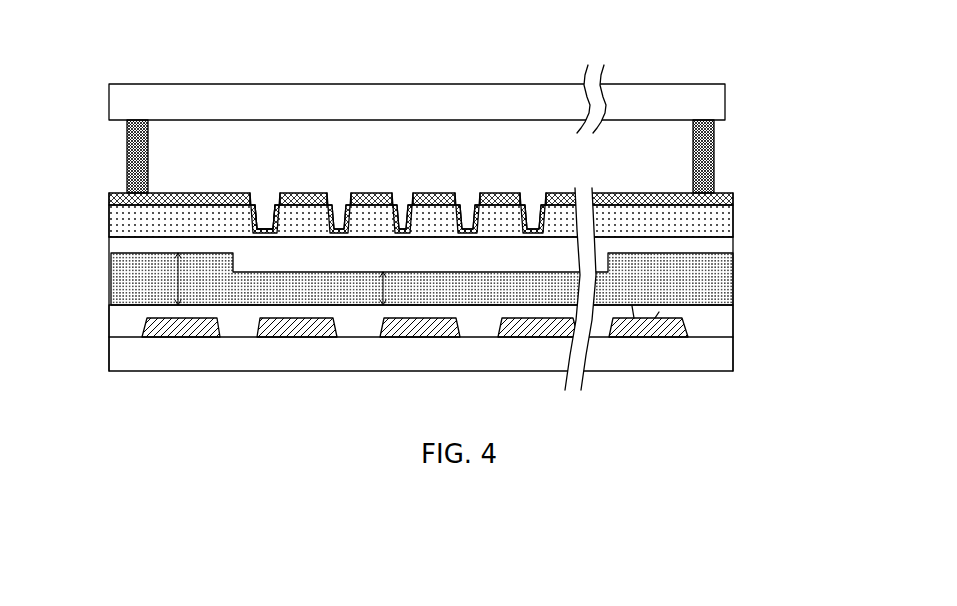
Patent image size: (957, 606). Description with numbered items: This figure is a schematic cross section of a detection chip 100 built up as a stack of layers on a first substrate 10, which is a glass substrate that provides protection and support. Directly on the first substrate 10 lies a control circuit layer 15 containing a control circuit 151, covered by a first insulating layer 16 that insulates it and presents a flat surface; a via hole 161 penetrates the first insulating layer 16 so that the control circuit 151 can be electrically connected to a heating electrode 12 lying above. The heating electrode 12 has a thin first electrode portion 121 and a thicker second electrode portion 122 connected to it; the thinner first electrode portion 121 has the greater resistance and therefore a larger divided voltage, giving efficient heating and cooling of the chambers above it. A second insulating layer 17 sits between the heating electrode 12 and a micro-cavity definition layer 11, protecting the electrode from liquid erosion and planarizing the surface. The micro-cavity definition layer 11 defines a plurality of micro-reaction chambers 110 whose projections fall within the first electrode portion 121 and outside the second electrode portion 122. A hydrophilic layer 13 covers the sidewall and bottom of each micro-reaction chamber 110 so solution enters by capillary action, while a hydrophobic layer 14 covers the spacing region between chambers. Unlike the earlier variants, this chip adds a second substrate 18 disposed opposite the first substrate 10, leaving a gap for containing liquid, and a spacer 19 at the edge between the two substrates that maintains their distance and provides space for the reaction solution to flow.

The detection chip 100 is at (795, 30).
The first substrate 10 is at (705, 356).
The micro-cavity definition layer 11 is at (475, 194).
The micro-reaction chamber 110 is at (265, 220).
The heating electrode 12 is at (435, 343).
The first electrode portion 121 is at (268, 303).
The second electrode portion 122 is at (113, 288).
The hydrophilic layer 13 is at (328, 218).
The hydrophobic layer 14 is at (433, 202).
The control circuit layer 15 is at (515, 329).
The control circuit 151 is at (687, 330).
The first insulating layer 16 is at (130, 318).
The via hole 161 is at (655, 312).
The second insulating layer 17 is at (133, 244).
The second substrate 18 is at (702, 102).
The spacer 19 is at (714, 173).